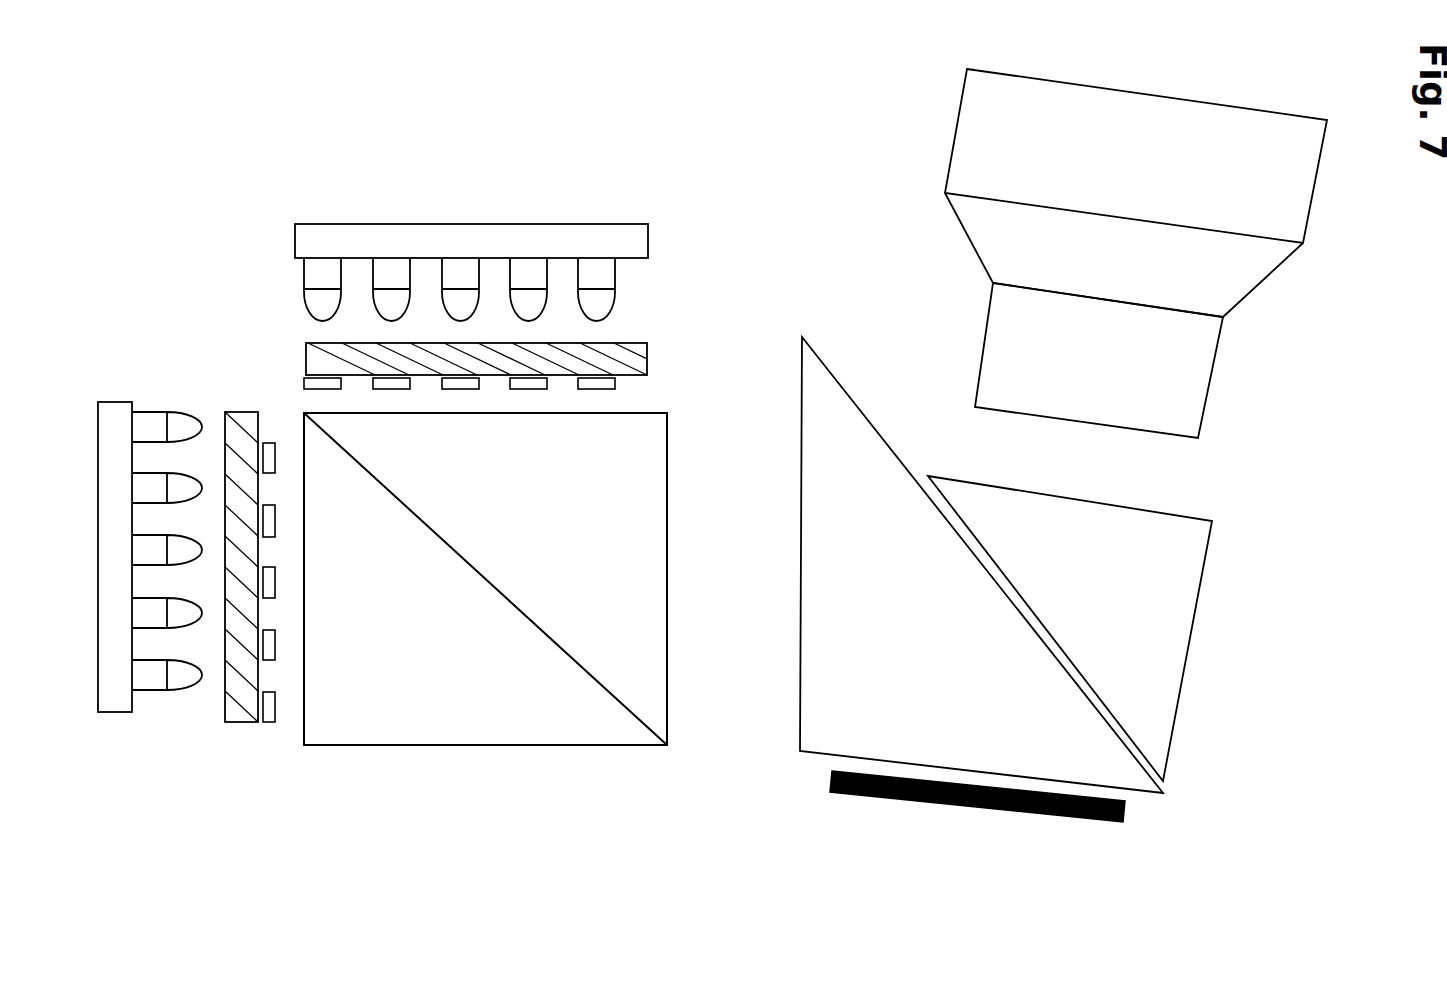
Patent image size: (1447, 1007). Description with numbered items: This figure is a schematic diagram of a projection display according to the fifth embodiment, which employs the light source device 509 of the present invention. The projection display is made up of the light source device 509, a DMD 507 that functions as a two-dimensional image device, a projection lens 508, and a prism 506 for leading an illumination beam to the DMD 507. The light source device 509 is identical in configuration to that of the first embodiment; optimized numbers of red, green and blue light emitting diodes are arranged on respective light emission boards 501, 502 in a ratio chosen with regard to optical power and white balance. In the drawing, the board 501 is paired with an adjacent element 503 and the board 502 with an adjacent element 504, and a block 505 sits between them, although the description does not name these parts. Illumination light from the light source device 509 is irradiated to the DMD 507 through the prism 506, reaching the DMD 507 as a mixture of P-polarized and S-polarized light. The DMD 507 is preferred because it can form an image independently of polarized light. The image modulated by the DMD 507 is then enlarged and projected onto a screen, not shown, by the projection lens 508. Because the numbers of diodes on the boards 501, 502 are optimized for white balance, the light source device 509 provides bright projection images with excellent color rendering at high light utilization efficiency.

The light emission board 501 is at (648, 243).
The light emission board 502 is at (155, 378).
The lens array 503 is at (648, 357).
The lens array 504 is at (240, 722).
The dichroic prism 505 is at (667, 577).
The prism 506 is at (842, 383).
The DMD 507 is at (832, 783).
The projection lens 508 is at (1192, 70).
The light source device 509 is at (557, 173).